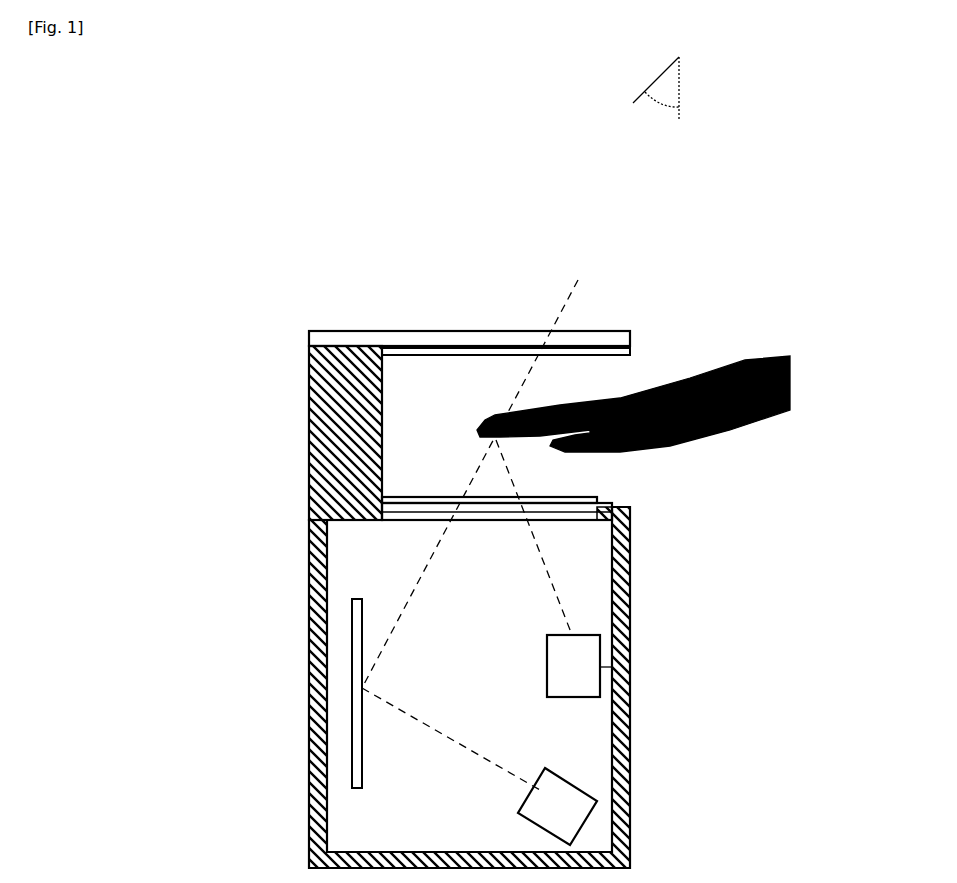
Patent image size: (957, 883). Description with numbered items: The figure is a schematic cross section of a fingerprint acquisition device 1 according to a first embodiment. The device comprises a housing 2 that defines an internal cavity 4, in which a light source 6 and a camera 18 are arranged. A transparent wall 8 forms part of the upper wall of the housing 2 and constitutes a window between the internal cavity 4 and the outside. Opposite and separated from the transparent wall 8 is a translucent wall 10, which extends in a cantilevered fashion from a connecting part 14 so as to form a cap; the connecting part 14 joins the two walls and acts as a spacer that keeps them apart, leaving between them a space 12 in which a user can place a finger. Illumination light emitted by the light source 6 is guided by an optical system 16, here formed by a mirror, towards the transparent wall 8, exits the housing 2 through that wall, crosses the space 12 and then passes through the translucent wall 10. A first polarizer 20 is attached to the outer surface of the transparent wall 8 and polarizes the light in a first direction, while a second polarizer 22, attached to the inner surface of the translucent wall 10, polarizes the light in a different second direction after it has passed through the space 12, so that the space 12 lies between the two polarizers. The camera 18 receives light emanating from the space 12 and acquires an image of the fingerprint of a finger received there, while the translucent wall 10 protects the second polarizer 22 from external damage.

The fingerprint acquisition device 1 is at (158, 274).
The housing 2 is at (309, 582).
The internal cavity 4 is at (456, 692).
The light source 6 is at (595, 818).
The transparent wall 8 is at (583, 513).
The translucent wall 10 is at (422, 331).
The space 12 is at (421, 442).
The connecting part 14 is at (309, 432).
The optical system 16 is at (352, 732).
The camera 18 is at (600, 667).
The first polarizer 20 is at (555, 494).
The second polarizer 22 is at (630, 350).